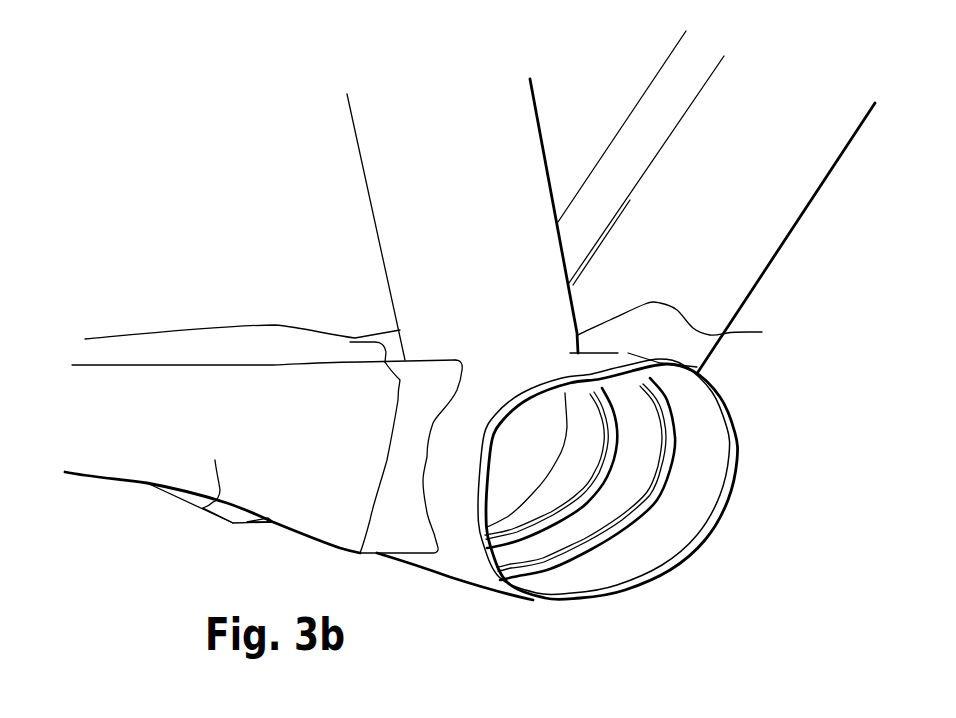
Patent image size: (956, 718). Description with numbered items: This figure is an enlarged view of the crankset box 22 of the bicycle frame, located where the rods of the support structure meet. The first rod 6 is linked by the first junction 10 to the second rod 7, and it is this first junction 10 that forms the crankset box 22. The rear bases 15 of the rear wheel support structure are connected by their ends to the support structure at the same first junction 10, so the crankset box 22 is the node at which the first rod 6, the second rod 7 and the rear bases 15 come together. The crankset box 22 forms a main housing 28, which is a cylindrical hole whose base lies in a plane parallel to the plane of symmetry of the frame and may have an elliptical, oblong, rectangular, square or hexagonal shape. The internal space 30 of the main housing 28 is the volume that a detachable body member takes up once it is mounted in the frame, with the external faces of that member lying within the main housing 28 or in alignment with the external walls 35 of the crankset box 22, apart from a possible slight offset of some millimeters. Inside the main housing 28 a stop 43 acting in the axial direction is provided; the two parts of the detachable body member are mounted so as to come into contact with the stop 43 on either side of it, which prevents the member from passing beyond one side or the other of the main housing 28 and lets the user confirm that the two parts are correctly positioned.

The first rod 6 is at (755, 221).
The second rod 7 is at (397, 182).
The first junction 10 is at (690, 322).
The rear base 15 is at (200, 508).
The crankset box 22 is at (473, 557).
The main housing 28 is at (542, 406).
The internal space 30 is at (526, 460).
The external wall 35 is at (718, 402).
The stop 43 is at (672, 457).